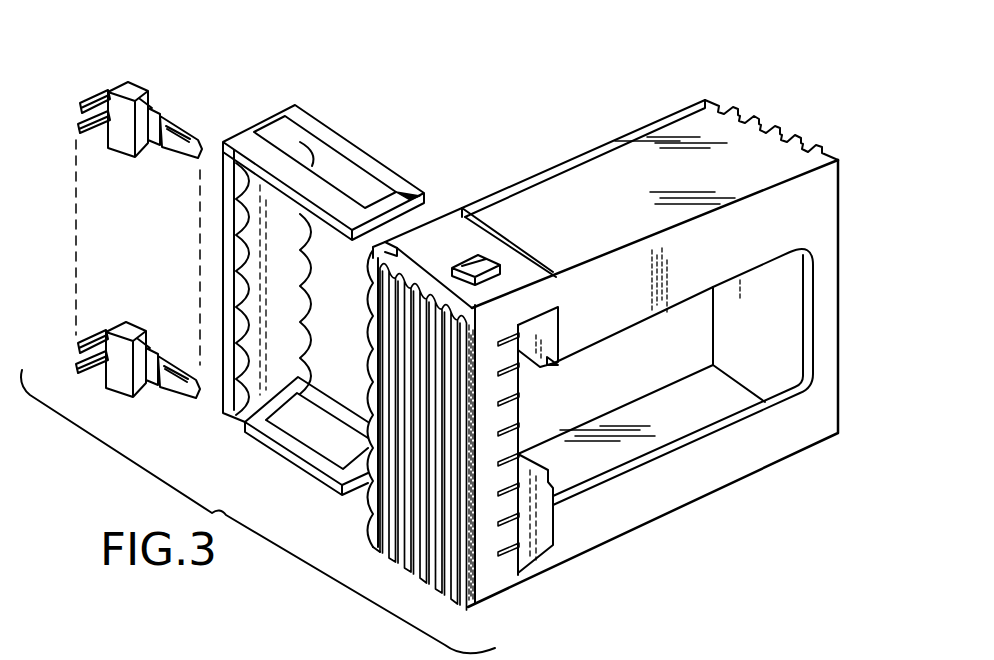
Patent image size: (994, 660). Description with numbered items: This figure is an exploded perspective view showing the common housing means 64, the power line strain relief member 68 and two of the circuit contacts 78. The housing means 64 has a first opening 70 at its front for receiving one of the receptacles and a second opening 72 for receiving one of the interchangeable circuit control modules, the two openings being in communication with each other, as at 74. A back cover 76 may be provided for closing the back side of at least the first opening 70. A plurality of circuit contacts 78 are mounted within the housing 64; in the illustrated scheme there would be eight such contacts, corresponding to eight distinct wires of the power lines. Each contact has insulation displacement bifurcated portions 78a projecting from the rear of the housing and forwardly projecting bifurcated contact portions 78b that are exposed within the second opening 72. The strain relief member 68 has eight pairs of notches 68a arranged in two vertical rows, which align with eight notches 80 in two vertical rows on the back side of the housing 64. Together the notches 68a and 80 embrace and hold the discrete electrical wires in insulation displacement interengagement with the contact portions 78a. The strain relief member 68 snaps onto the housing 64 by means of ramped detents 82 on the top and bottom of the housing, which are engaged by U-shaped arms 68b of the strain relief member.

The housing means 64 is at (603, 333).
The strain relief member 68 is at (347, 284).
The notches 68a is at (312, 272).
The U-shaped arms 68b is at (395, 192).
The first opening 70 is at (743, 277).
The second opening 72 is at (552, 537).
The communication between openings 74 is at (540, 368).
The back cover 76 is at (600, 146).
The circuit contacts 78 is at (152, 90).
The insulation displacement bifurcated portions 78a is at (115, 90).
The forwardly projecting bifurcated contact portions 78b is at (193, 132).
The notches 80 is at (372, 340).
The ramped detents 82 is at (487, 262).